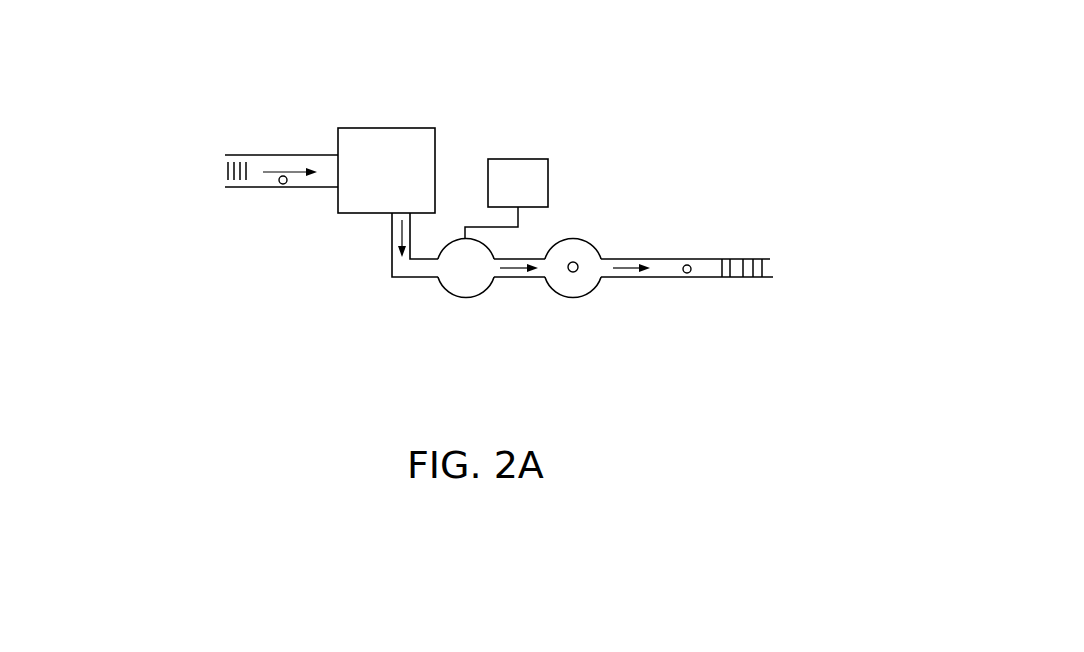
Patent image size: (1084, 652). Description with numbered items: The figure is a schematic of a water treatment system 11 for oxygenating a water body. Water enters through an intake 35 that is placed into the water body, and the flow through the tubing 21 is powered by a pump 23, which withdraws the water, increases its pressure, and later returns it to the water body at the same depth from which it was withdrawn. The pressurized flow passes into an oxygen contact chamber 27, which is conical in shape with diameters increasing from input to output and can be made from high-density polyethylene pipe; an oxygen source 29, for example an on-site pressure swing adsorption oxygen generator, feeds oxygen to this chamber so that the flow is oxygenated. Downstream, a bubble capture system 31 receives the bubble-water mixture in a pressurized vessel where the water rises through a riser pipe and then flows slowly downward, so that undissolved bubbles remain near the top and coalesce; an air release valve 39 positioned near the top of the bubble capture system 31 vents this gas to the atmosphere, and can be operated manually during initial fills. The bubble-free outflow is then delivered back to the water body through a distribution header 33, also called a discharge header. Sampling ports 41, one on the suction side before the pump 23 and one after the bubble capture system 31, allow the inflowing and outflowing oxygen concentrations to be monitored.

The water treatment system 11 is at (552, 82).
The tubing 21 is at (290, 155).
The pump 23 is at (387, 128).
The oxygen contact chamber 27 is at (466, 298).
The oxygen source 29 is at (548, 168).
The bubble capture system 31 is at (575, 239).
The distribution header 33 is at (757, 259).
The intake 35 is at (250, 187).
The air release valve 39 is at (569, 272).
The sampling ports 41 is at (283, 185).